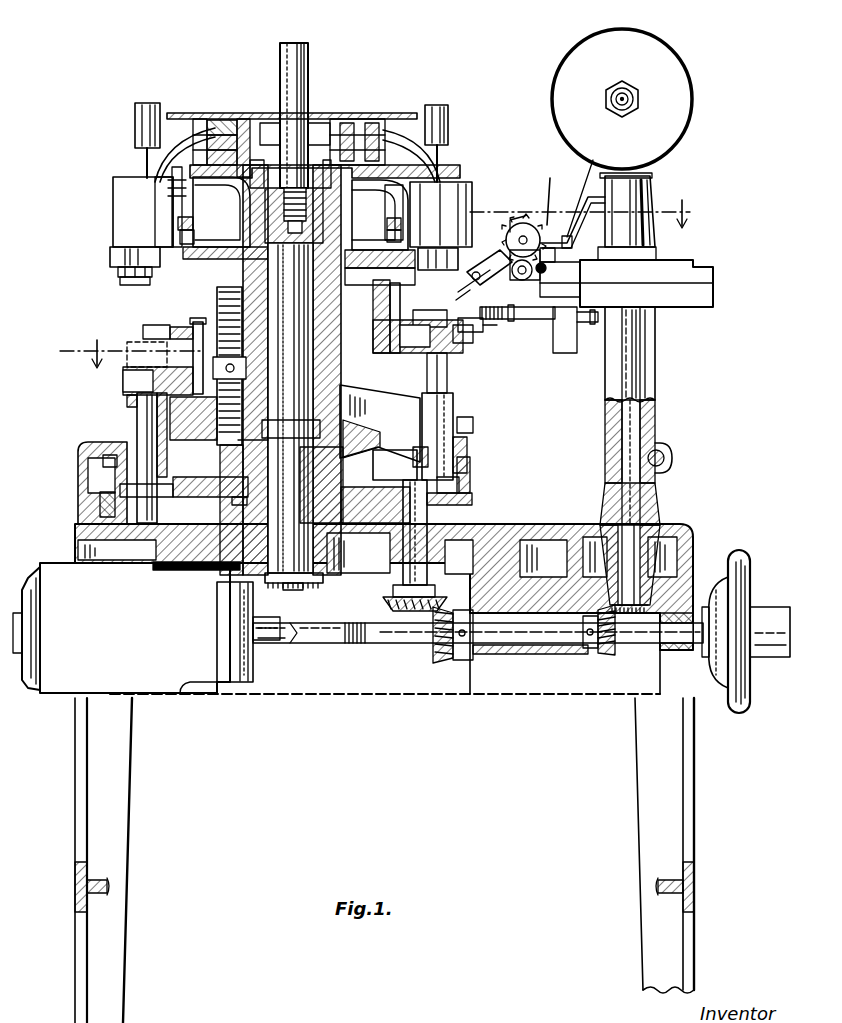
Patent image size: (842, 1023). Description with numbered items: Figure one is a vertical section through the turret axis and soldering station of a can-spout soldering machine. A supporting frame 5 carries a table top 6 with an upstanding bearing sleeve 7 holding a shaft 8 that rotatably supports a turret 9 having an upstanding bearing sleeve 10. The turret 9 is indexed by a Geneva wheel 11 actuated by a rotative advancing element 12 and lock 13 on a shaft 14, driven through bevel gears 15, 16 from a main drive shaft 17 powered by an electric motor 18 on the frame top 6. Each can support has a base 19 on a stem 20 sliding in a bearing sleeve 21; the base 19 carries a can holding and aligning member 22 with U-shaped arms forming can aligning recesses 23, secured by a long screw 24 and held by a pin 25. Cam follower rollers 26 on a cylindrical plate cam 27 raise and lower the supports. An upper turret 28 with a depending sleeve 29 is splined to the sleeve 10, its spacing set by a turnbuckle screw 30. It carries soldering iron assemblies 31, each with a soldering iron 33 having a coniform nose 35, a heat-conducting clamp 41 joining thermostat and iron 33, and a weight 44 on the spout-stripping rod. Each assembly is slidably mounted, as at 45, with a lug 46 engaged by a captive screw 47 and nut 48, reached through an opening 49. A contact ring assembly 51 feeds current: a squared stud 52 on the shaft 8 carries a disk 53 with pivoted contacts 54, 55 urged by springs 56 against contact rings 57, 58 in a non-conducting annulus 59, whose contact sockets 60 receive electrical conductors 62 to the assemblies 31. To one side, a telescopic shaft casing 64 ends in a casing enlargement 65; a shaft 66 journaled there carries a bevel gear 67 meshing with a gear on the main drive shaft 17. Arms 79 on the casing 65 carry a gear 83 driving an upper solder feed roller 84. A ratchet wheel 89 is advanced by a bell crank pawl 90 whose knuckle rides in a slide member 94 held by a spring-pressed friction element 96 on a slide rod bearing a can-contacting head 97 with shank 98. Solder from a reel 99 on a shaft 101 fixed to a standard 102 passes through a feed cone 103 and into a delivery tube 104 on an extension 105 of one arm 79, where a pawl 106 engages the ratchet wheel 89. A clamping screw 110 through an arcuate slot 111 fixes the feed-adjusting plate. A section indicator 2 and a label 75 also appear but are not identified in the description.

The section line 2 is at (379, 284).
The supporting frame 5 is at (384, 860).
The table top 6 is at (163, 542).
The upstanding bearing sleeve 7 is at (247, 505).
The shaft 8 is at (480, 138).
The turret 9 is at (360, 422).
The upstanding bearing sleeve 10 is at (352, 394).
The Geneva wheel 11 is at (395, 465).
The rotative advancing element 12 is at (460, 490).
The lock 13 is at (470, 470).
The shaft 14 is at (413, 553).
The bevel gear 15 is at (397, 612).
The bevel gear 16 is at (437, 652).
The main drive shaft 17 is at (407, 645).
The electric motor 18 is at (146, 628).
The base 19 is at (127, 398).
The stem 20 is at (137, 426).
The bearing sleeve 21 is at (205, 477).
The can holding and aligning member 22 is at (180, 327).
The can aligning recesses 23 is at (143, 330).
The screw 24 is at (198, 322).
The pin 25 is at (123, 372).
The cam follower rollers 26 is at (90, 468).
The cylindrical plate cam 27 is at (100, 500).
The upper turret 28 is at (448, 145).
The depending sleeve 29 is at (380, 274).
The turnbuckle screw 30 is at (208, 366).
The soldering iron assemblies 31 is at (113, 212).
The soldering iron 33 is at (118, 270).
The coniform nose 35 is at (120, 282).
The clamp 41 is at (110, 255).
The weight 44 is at (140, 118).
The slidable mounting 45 is at (160, 190).
The inwardly extending lug 46 is at (194, 236).
The captive screw 47 is at (172, 205).
The nut 48 is at (178, 224).
The opening 49 is at (147, 170).
The contact ring assembly 51 is at (348, 113).
The squared stud 52 is at (300, 50).
The disk 53 is at (240, 185).
The metal contact 54 is at (300, 118).
The metal contact 55 is at (340, 114).
The springs 56 is at (295, 175).
The upper contact ring 57 is at (250, 120).
The lower contact ring 58 is at (262, 140).
The annulus 59 is at (235, 113).
The upper contact sockets 60 is at (193, 130).
The electrical conductors 62 is at (150, 140).
The telescopic shaft casing 64 is at (652, 360).
The casing enlargement 65 is at (690, 298).
The shaft 66 is at (640, 458).
The bevel gear 67 is at (626, 645).
The block 75 is at (580, 280).
The spaced parallel arms 79 is at (573, 198).
The gear 83 is at (546, 191).
The upper solder feed roller 84 is at (518, 218).
The ratchet wheel 89 is at (572, 295).
The bell crank ratchet feed lever 90 is at (580, 233).
The slide member 94 is at (568, 325).
The spring-pressed friction element 96 is at (517, 312).
The can-contacting head 97 is at (473, 331).
The shank 98 is at (501, 334).
The reel 99 is at (622, 99).
The shaft 101 is at (637, 97).
The standard 102 is at (654, 232).
The feed cone 103 is at (572, 221).
The delivery tube 104 is at (440, 380).
The extension 105 is at (478, 265).
The pawl 106 is at (480, 290).
The clamping screw 110 is at (541, 270).
The arcuate slot 111 is at (524, 247).